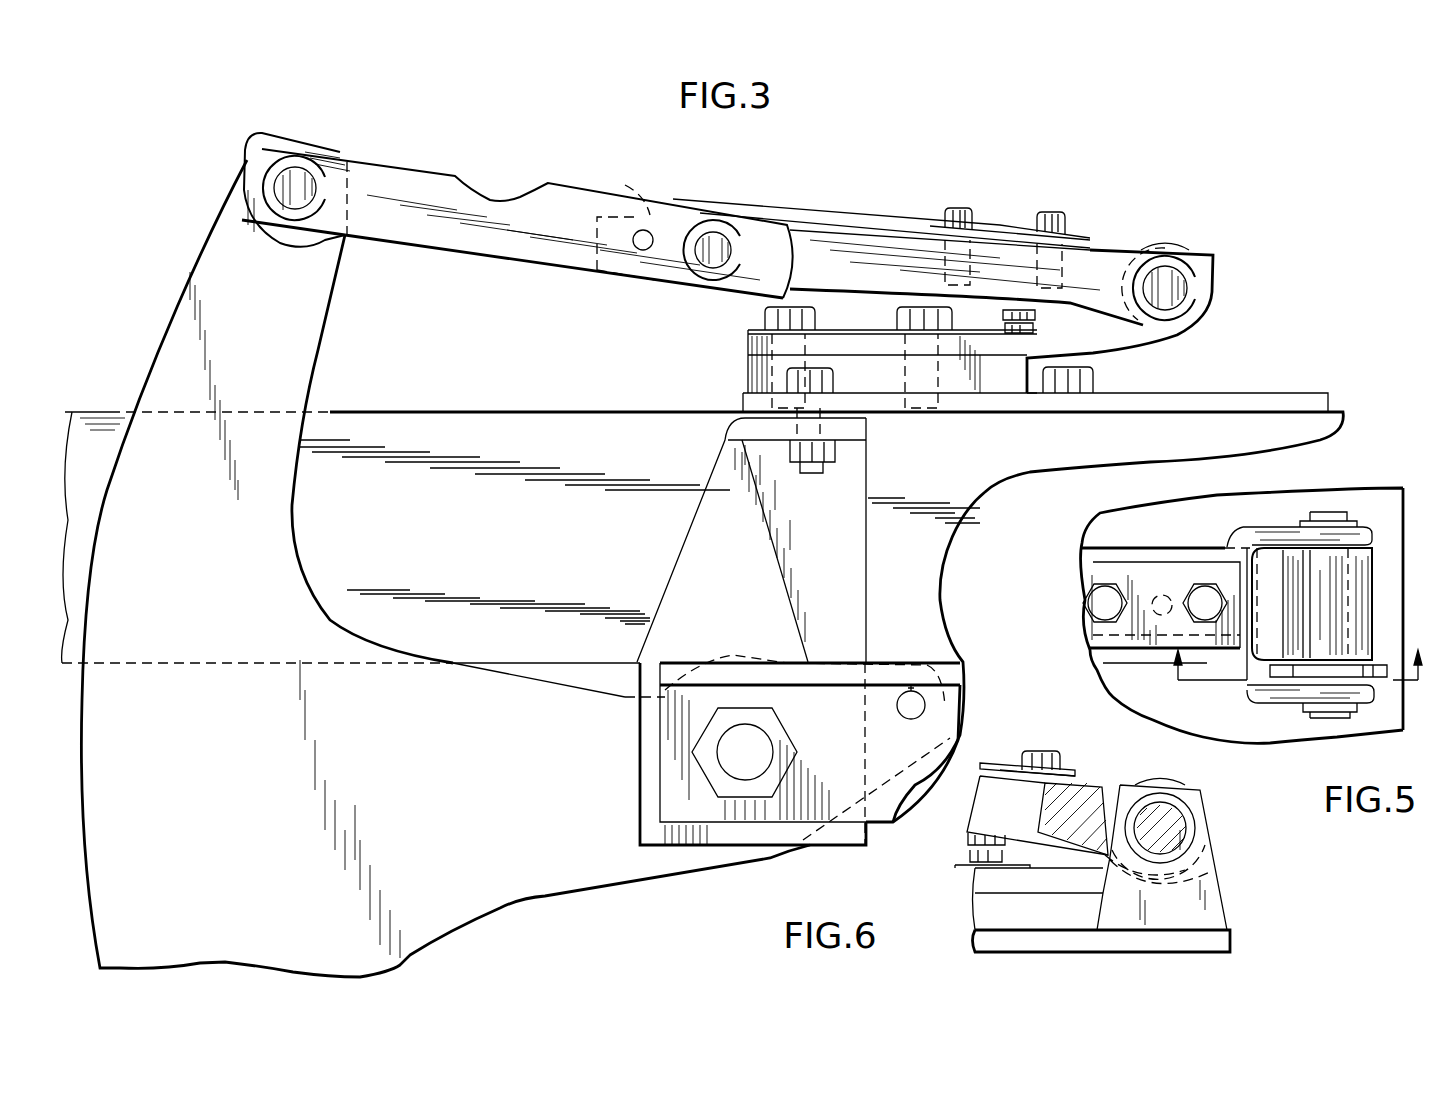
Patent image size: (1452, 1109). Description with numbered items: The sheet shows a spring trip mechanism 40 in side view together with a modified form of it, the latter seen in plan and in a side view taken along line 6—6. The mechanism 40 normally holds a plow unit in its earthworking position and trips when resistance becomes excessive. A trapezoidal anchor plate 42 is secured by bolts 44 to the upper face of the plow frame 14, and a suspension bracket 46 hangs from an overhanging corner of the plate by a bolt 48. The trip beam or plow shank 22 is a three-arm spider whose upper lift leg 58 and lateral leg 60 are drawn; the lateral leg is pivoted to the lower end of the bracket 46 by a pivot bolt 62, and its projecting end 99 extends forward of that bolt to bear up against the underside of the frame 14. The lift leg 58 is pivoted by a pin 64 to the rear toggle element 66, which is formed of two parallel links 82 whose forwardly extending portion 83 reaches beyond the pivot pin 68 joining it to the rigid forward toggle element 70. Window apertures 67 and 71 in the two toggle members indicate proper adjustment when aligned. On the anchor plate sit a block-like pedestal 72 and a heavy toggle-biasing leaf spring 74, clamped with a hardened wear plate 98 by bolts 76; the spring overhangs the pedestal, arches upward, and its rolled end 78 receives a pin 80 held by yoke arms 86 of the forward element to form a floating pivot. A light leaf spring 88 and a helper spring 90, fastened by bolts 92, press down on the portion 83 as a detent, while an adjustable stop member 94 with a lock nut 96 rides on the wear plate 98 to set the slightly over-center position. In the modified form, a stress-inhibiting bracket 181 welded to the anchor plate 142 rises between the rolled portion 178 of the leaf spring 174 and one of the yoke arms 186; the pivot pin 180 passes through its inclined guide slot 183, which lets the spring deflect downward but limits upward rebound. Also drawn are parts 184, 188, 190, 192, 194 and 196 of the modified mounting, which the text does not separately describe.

In FIG. 3, the plow frame 14 is at (105, 432).
In FIG. 5, the plow frame 14 is at (1241, 615).
In FIG. 3, the trip beam or plow shank 22 is at (178, 736).
In FIG. 3, the spring trip mechanism 40 is at (350, 264).
In FIG. 3, the anchor plate 42 is at (1227, 400).
In FIG. 3, the bolts 44 is at (1095, 375).
In FIG. 3, the suspension bracket or standard 46 is at (700, 535).
In FIG. 3, the bolt 48 is at (835, 380).
In FIG. 3, the upper lift leg or fixed shank 58 is at (305, 330).
In FIG. 3, the intermediate lateral leg 60 is at (518, 690).
In FIG. 3, the pivot bolt 62 is at (715, 735).
In FIG. 3, the pin 64 is at (294, 180).
In FIG. 3, the rear toggle element 66 is at (572, 215).
In FIG. 3, the window aperture 67 is at (660, 215).
In FIG. 3, the pivot pin 68 is at (716, 243).
In FIG. 3, the forward toggle element 70 is at (880, 240).
In FIG. 3, the window aperture 71 is at (623, 216).
In FIG. 3, the pedestal 72 is at (750, 368).
In FIG. 3, the toggle-biasing leaf spring 74 is at (1020, 395).
In FIG. 3, the bolts 76 is at (768, 320).
In FIG. 3, the rolled end 78 is at (1182, 246).
In FIG. 3, the pin 80 is at (1170, 285).
In FIG. 3, the parallel links 82 is at (497, 185).
In FIG. 3, the forwardly extending portion 83 is at (880, 252).
In FIG. 3, the yoke arms 86 is at (1200, 290).
In FIG. 3, the leaf spring 88 is at (795, 230).
In FIG. 3, the helper spring 90 is at (992, 228).
In FIG. 3, the bolts 92 is at (958, 208).
In FIG. 3, the stop member 94 is at (1035, 322).
In FIG. 3, the lock nut 96 is at (1062, 301).
In FIG. 3, the shim or hardened steel wear plate 98 is at (985, 330).
In FIG. 3, the projecting end 99 is at (960, 715).
In FIG. 6, the anchor plate 142 is at (1220, 940).
In FIG. 6, the leaf spring 174 is at (980, 885).
In FIG. 5, the rolled portion 178 is at (1293, 567).
In FIG. 6, the rolled portion 178 is at (1175, 780).
In FIG. 5, the pivot pin 180 is at (1328, 512).
In FIG. 6, the pivot pin 180 is at (1175, 818).
In FIG. 6, the stress-inhibiting bracket 181 is at (1205, 908).
In FIG. 6, the inclined guide slot 183 is at (1190, 842).
In FIG. 6, the bearing 184 is at (1070, 828).
In FIG. 5, the yoke arms 186 is at (1365, 527).
In FIG. 6, the lever 188 is at (1000, 775).
In FIG. 5, the plate 190 is at (1183, 650).
In FIG. 6, the plate 190 is at (1065, 772).
In FIG. 5, the bolt 192 is at (1205, 590).
In FIG. 6, the bolt 192 is at (1040, 750).
In FIG. 5, the hole 194 is at (1157, 597).
In FIG. 6, the hole 194 is at (968, 855).
In FIG. 6, the nut 196 is at (968, 840).
In FIG. 5, the section line 6 is at (1263, 684).